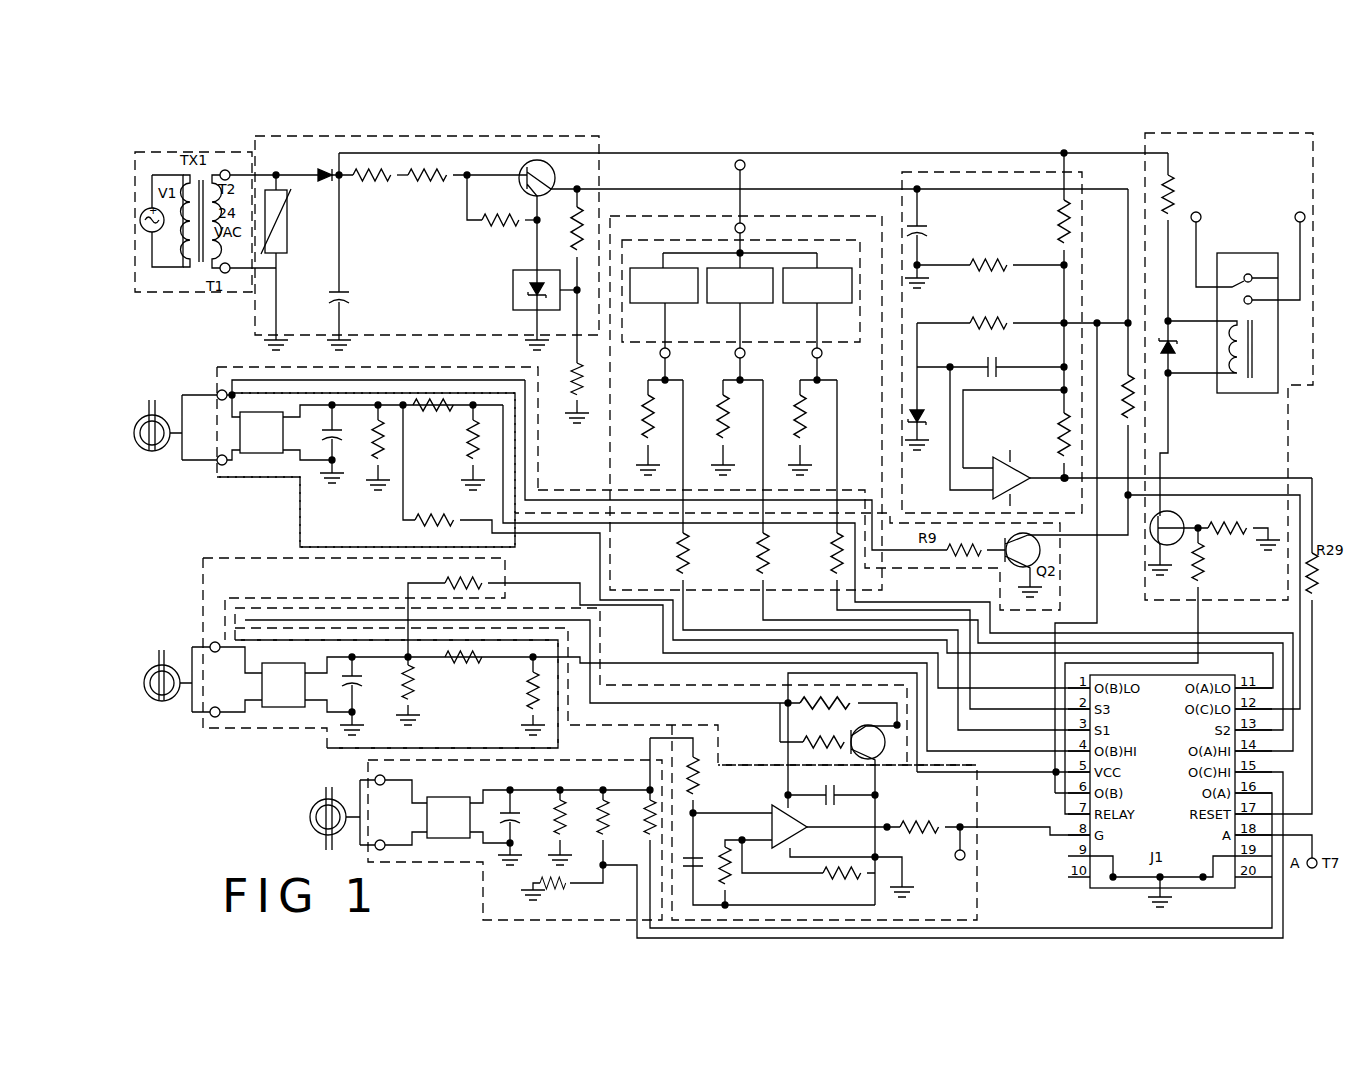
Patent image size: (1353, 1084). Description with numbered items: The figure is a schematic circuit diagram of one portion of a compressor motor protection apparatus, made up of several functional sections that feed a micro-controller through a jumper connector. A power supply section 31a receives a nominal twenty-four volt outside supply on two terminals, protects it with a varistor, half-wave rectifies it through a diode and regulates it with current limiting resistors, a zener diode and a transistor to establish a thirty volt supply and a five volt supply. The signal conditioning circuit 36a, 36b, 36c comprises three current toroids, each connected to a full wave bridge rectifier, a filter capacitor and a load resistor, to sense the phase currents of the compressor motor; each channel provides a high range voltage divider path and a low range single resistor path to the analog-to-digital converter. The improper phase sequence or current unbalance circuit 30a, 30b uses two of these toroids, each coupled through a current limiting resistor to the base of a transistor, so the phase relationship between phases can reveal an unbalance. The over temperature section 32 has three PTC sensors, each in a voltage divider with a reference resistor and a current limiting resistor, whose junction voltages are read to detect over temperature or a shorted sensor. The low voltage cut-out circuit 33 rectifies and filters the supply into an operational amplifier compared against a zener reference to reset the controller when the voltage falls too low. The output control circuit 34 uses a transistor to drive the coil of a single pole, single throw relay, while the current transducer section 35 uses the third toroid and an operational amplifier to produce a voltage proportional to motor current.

The improper phase sequence section 30a is at (225, 366).
The improper phase sequence section 30b is at (320, 597).
The power supply section 31a is at (606, 135).
The over temperature section 32 is at (817, 212).
The low voltage cut-out circuit 33 is at (998, 168).
The output control circuit 34 is at (1254, 130).
The current transducer section 35 is at (1012, 862).
The signal conditioning circuit 36a is at (295, 508).
The signal conditioning circuit 36b is at (268, 740).
The signal conditioning circuit 36c is at (478, 878).